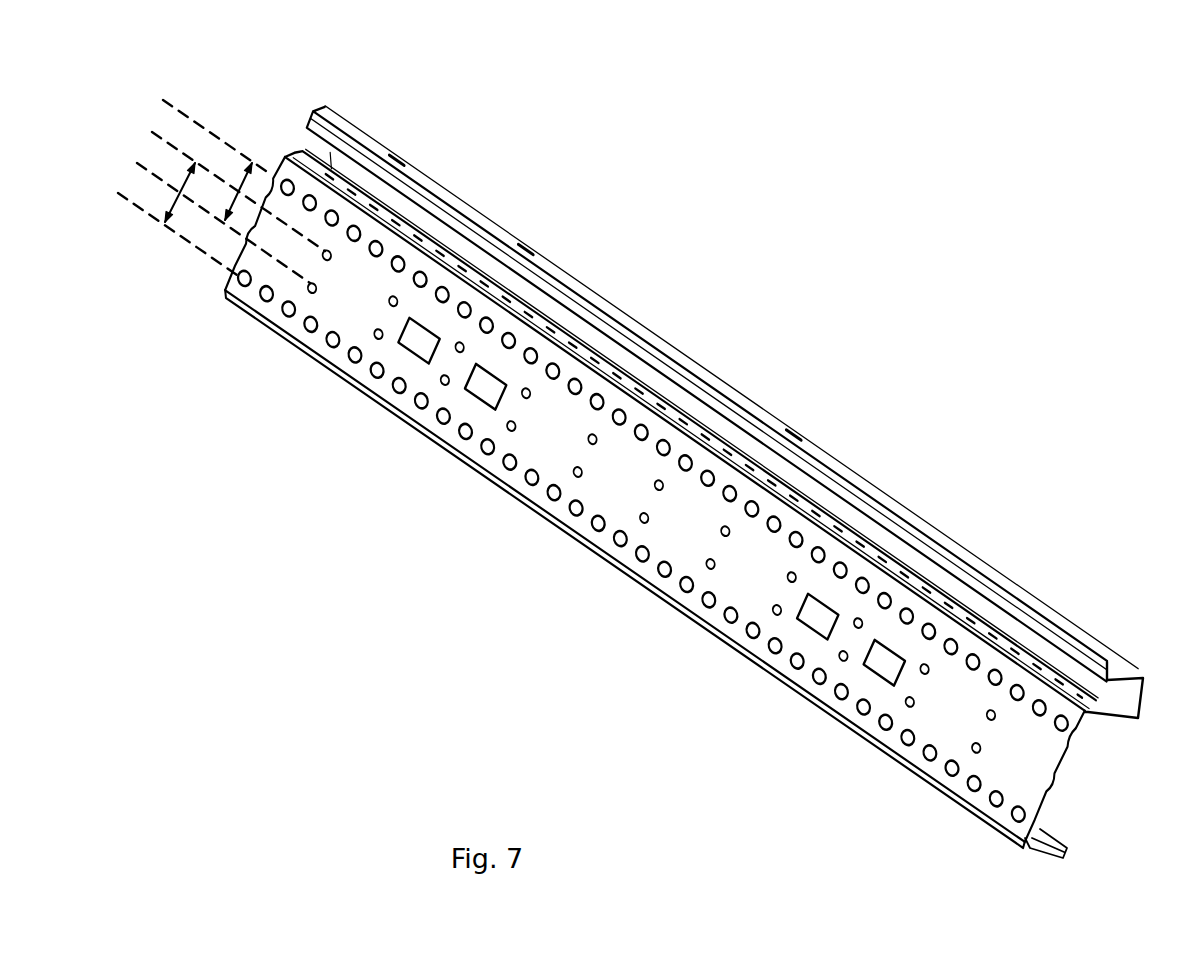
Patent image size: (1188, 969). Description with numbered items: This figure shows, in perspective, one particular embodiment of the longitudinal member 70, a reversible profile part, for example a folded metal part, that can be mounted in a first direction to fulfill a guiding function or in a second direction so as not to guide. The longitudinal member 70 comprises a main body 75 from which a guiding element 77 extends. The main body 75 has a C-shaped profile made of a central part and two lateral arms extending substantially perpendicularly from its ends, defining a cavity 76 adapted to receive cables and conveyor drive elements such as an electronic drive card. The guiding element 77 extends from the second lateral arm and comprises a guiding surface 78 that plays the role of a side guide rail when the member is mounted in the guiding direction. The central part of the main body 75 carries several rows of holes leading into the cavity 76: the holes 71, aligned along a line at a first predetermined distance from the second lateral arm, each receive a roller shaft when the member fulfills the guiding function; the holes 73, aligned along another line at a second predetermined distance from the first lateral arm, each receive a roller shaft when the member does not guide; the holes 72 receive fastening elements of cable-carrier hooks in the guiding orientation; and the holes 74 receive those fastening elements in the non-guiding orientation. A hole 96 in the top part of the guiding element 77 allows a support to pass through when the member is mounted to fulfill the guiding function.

The longitudinal member 70 is at (1090, 802).
The holes 71 is at (908, 615).
The holes 72 is at (712, 563).
The holes 73 is at (887, 723).
The holes 74 is at (728, 532).
The main body 75 is at (1073, 740).
The cavity 76 is at (1057, 815).
The guiding element 77 is at (1140, 668).
The guiding surface 78 is at (1100, 657).
The hole 96 is at (528, 250).